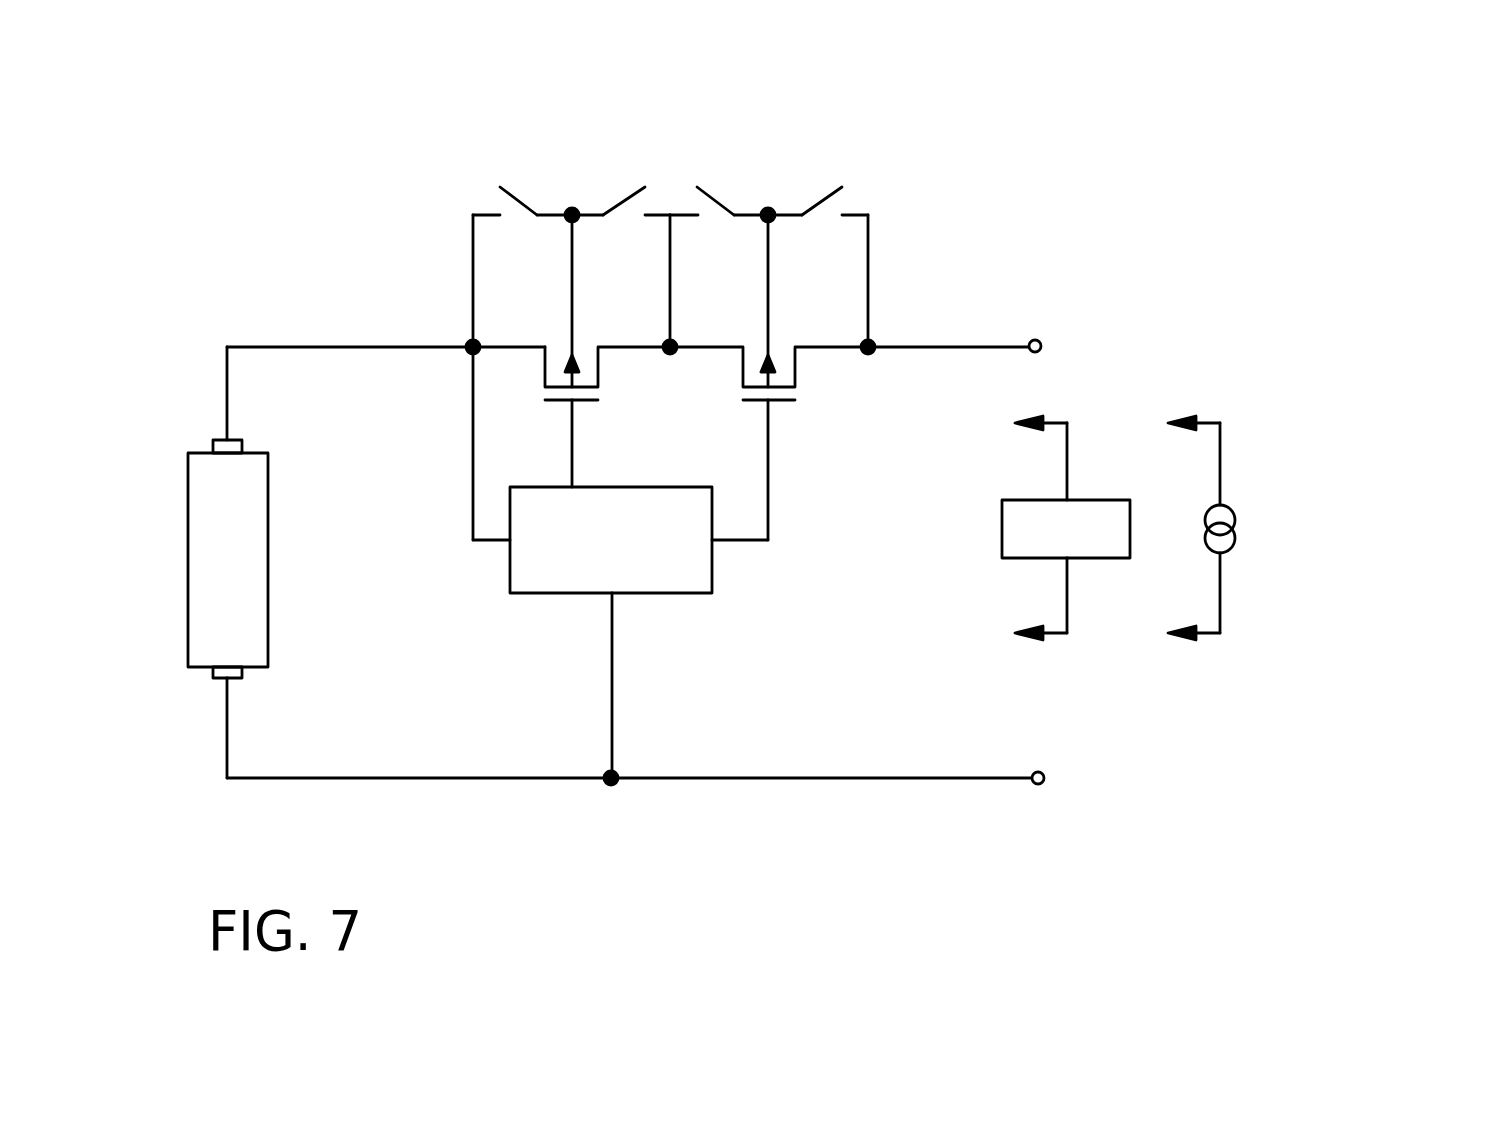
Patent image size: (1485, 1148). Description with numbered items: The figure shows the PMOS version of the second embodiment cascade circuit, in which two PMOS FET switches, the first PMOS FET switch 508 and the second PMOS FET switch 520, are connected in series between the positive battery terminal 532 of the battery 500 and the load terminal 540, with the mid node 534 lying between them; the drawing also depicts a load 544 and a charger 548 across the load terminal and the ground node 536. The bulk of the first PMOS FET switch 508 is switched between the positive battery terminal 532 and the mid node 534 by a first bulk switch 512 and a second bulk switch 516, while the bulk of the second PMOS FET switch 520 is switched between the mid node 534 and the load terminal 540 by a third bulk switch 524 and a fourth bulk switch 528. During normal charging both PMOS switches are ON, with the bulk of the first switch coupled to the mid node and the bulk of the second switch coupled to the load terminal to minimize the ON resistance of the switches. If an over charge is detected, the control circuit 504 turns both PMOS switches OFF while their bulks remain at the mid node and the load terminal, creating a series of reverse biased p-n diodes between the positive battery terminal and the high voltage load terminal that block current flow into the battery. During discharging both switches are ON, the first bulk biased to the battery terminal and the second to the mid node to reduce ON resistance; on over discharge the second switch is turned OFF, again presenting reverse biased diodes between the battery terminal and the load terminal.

The battery 500 is at (248, 633).
The control circuit 504 is at (643, 573).
The PMOS FET switch P1 508 is at (586, 402).
The switch SW1 512 is at (512, 192).
The switch SW2 516 is at (622, 200).
The PMOS FET switch P2 520 is at (783, 402).
The switch SW3 524 is at (712, 185).
The switch SW4 528 is at (830, 190).
The positive battery terminal VBATT 532 is at (248, 347).
The MID node 534 is at (676, 344).
The GND node 536 is at (268, 778).
The load terminal LOAD 540 is at (938, 347).
The load 544 is at (1022, 555).
The charger 548 is at (1232, 553).